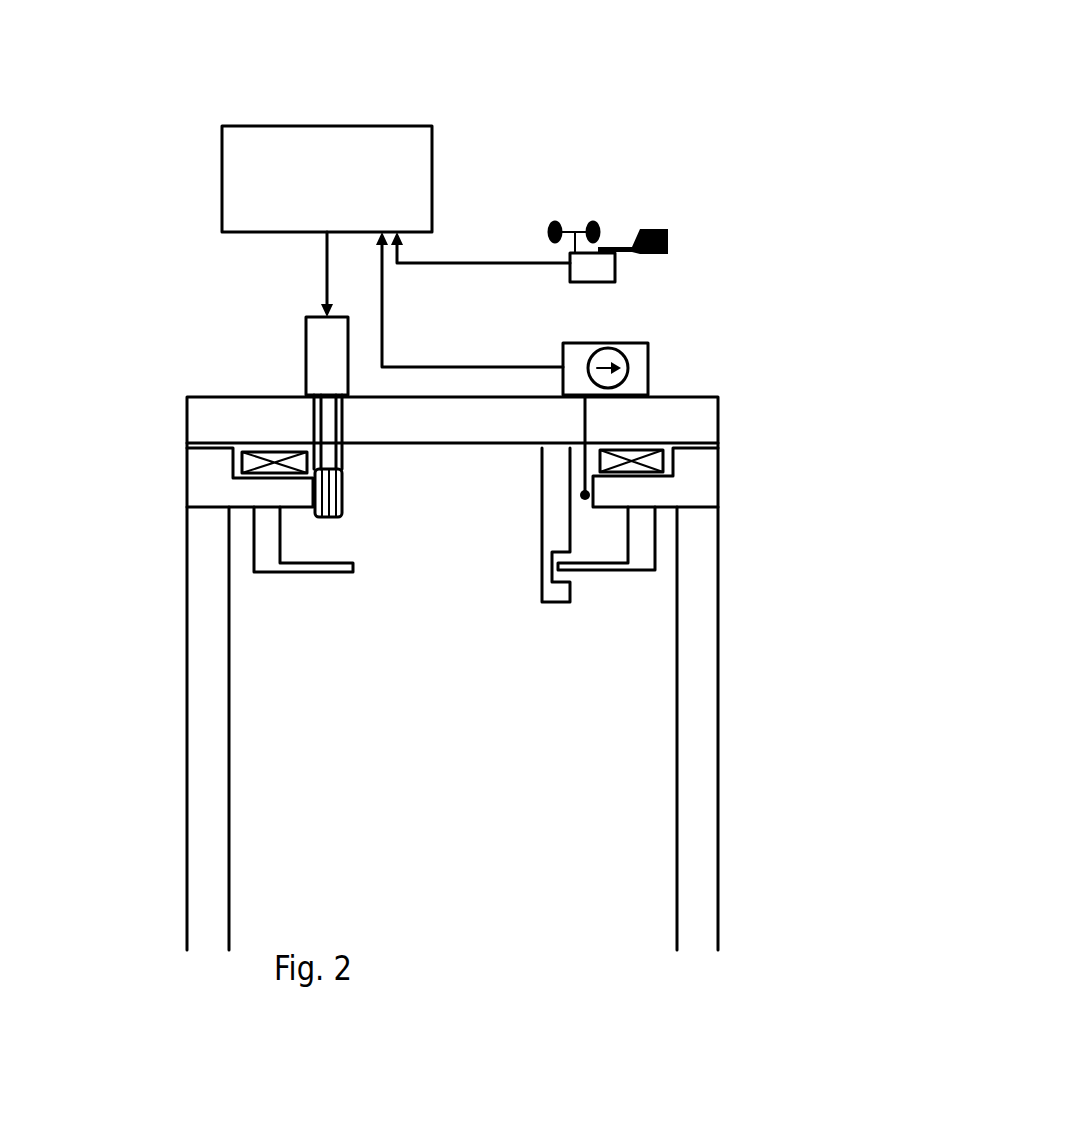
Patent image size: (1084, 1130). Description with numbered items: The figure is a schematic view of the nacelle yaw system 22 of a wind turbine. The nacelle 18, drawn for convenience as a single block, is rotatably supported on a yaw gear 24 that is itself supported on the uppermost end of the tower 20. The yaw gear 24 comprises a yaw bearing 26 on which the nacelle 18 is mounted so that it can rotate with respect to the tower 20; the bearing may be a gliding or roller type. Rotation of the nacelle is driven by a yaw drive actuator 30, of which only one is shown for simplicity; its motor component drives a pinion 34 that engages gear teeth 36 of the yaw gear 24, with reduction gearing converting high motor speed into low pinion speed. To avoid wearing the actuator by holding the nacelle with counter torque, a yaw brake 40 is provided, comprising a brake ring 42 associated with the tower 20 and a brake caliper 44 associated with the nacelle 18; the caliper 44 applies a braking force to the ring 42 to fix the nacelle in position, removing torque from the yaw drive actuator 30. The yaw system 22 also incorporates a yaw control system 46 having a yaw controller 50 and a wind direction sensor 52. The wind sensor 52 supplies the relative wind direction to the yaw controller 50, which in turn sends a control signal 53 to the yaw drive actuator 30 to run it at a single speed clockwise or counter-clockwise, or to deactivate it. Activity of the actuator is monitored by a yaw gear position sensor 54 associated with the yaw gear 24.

The nacelle 18 is at (718, 417).
The tower 20 is at (707, 832).
The yaw system 22 is at (709, 70).
The yaw gear 24 is at (705, 500).
The yaw bearing 26 is at (242, 462).
The yaw drive actuator 30 is at (238, 333).
The pinion 34 is at (342, 492).
The gear teeth 36 is at (342, 512).
The yaw brake 40 is at (533, 652).
The brake ring 42 is at (638, 582).
The brake caliper 44 is at (542, 533).
The yaw control system 46 is at (120, 88).
The yaw controller 50 is at (432, 152).
The wind direction sensor 52 is at (615, 275).
The control signal 53 is at (327, 262).
The yaw gear position sensor 54 is at (648, 358).